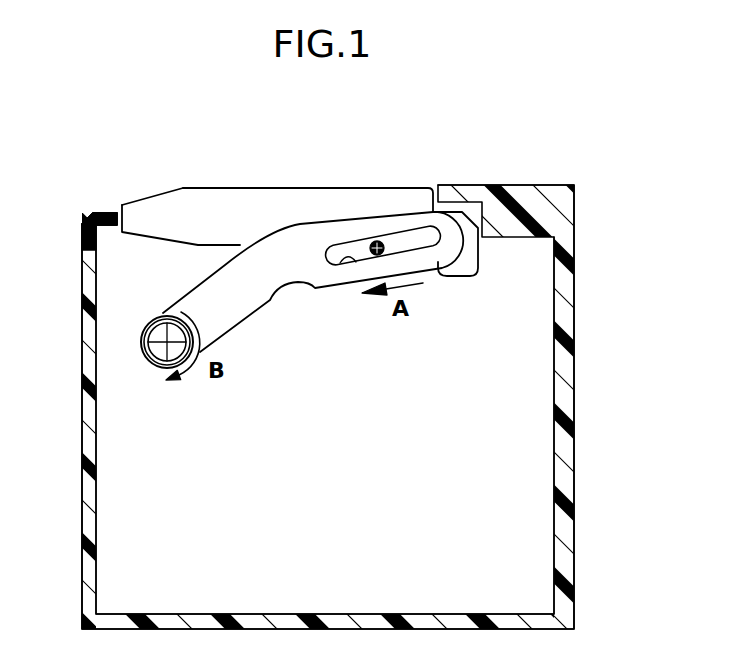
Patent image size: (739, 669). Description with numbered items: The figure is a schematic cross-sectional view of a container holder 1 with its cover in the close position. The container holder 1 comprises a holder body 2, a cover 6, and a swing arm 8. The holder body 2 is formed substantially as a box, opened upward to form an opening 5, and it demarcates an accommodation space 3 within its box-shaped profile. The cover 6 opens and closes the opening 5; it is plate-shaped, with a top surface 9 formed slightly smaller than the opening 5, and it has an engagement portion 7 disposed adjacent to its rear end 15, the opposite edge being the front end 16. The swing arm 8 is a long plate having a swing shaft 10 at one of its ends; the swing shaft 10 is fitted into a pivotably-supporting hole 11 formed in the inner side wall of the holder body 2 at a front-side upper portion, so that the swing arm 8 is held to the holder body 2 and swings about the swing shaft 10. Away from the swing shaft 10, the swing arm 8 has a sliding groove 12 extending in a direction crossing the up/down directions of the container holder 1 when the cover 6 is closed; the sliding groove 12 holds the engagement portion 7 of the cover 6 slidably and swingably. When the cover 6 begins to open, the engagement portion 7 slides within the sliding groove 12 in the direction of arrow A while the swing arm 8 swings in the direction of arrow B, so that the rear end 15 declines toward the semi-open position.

The container holder 1 is at (472, 143).
The holder body 2 is at (560, 288).
The accommodation space 3 is at (502, 554).
The opening 5 is at (306, 182).
The cover 6 is at (207, 212).
The engagement portion 7 is at (378, 243).
The swing arm 8 is at (270, 245).
The top surface 9 is at (183, 187).
The swing shaft 10 is at (170, 330).
The pivotably-supporting hole 11 is at (147, 355).
The sliding groove 12 is at (335, 263).
The rear end 15 is at (455, 293).
The front end 16 is at (115, 201).